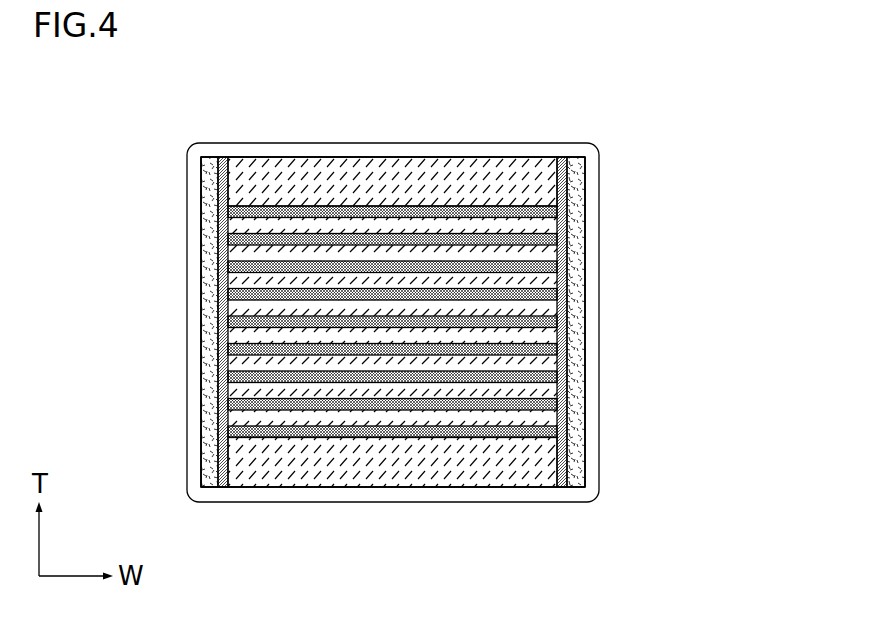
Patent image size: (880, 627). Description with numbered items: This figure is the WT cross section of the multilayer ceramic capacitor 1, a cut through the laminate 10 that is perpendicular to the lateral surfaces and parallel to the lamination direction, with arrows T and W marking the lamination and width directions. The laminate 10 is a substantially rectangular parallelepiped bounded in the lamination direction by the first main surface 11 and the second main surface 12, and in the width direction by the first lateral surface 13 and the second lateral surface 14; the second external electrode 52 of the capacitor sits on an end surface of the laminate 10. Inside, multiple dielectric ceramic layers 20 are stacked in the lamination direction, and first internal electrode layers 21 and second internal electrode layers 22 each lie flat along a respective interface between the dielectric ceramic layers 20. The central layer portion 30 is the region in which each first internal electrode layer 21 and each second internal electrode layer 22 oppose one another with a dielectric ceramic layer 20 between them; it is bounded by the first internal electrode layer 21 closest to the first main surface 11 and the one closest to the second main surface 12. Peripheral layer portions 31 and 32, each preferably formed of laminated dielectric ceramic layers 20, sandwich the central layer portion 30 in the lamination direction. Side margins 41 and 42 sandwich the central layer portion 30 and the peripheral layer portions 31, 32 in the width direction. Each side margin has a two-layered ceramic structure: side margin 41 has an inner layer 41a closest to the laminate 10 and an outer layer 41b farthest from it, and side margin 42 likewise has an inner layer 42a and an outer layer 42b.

The multilayer ceramic capacitor 1 is at (148, 113).
The laminate 10 is at (527, 147).
The first main surface 11 is at (295, 150).
The second main surface 12 is at (497, 488).
The first lateral surface 13 is at (208, 372).
The second lateral surface 14 is at (578, 375).
The dielectric ceramic layers 20 is at (390, 360).
The first internal electrode layers 21 is at (402, 317).
The second internal electrode layers 22 is at (455, 293).
The central layer portion 30 is at (585, 208).
The peripheral layer portion 31 is at (585, 157).
The peripheral layer portion 32 is at (585, 486).
The side margin 41 is at (87, 193).
The inner layer 41a is at (223, 223).
The outer layer 41b is at (210, 262).
The side margin 42 is at (697, 238).
The inner layer 42a is at (562, 268).
The outer layer 42b is at (573, 307).
The second external electrode 52 is at (225, 150).